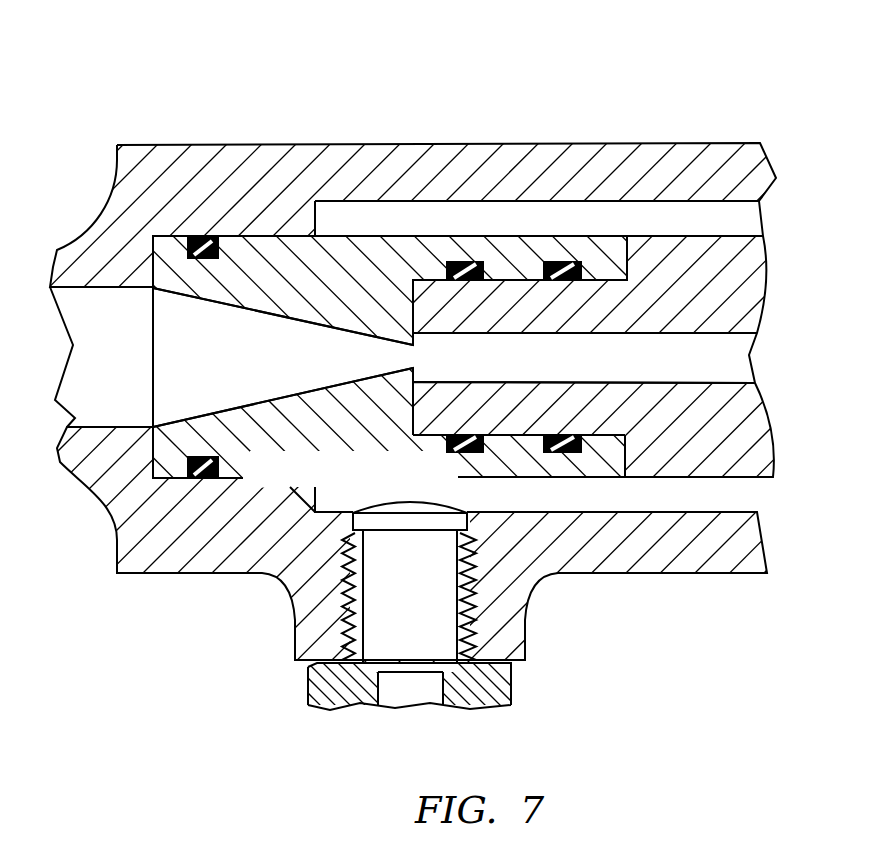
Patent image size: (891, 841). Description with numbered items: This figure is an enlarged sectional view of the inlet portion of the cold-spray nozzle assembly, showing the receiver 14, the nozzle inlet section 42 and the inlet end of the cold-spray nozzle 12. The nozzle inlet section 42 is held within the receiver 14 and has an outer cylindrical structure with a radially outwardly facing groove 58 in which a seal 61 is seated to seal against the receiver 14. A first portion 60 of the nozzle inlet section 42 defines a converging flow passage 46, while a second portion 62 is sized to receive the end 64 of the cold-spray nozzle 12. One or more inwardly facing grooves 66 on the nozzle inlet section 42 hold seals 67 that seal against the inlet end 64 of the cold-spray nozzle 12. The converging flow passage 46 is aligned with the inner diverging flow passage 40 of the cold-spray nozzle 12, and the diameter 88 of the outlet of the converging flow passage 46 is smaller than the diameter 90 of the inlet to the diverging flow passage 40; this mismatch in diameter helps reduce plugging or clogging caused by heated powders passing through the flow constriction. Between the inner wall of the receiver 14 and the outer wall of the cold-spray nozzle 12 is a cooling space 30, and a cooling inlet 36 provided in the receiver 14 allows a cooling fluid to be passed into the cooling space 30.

The receiver 14 is at (672, 163).
The cold-spray nozzle 12 is at (710, 262).
The cooling space 30 is at (737, 493).
The cooling inlet 36 is at (350, 680).
The diverging flow passage 40 is at (591, 367).
The nozzle inlet section 42 is at (270, 250).
The converging flow passage 46 is at (262, 372).
The radially outwardly facing groove 58 is at (200, 236).
The first portion 60 is at (256, 487).
The seal 61 is at (200, 457).
The second portion 62 is at (516, 233).
The end of cold-spray nozzle 64 is at (410, 392).
The inwardly facing grooves 66 is at (563, 452).
The seals 67 is at (468, 262).
The diameter of converging passage outlet 88 is at (413, 333).
The diameter of passage inlet 90 is at (413, 323).